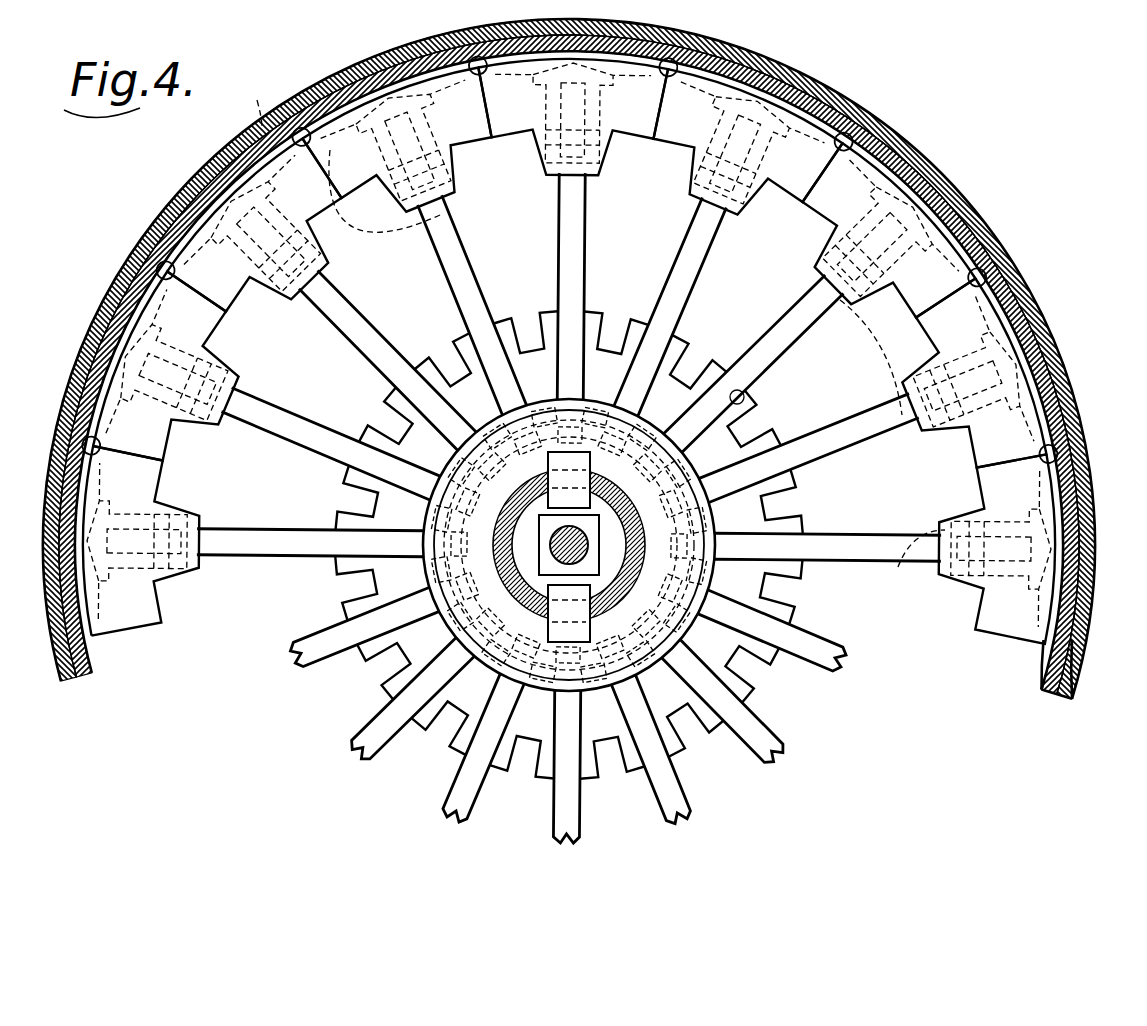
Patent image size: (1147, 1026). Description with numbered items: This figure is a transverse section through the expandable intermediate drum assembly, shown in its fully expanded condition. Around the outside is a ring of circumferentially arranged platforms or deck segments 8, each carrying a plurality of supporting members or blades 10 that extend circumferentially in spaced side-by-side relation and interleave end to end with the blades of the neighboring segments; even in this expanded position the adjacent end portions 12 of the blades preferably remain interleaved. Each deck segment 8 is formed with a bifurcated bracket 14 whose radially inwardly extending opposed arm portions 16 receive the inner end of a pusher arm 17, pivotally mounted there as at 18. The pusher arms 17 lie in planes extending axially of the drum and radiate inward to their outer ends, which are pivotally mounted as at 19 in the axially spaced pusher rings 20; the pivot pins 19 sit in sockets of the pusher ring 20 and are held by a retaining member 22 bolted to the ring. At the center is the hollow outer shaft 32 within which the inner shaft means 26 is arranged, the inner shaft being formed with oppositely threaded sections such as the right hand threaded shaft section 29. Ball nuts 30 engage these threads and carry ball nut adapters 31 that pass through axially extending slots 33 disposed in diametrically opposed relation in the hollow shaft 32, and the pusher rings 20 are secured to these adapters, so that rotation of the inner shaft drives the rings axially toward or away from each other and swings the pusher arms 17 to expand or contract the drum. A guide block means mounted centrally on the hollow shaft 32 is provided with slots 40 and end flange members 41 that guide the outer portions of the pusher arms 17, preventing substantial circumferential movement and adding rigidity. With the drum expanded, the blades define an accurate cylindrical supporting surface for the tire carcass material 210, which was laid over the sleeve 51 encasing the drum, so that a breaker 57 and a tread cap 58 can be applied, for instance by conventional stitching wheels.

The deck segment 8 is at (877, 165).
The supporting member or blade 10 is at (511, 120).
The adjacent end portion of blade 12 is at (293, 97).
The bifurcated bracket 14 is at (545, 32).
The arm portion 16 is at (405, 226).
The pusher arm 17 is at (670, 274).
The pivot 18 is at (545, 152).
The pivot pin 19 is at (595, 417).
The pusher ring 20 is at (658, 528).
The retaining member 22 is at (682, 623).
The inner shaft means 26 is at (583, 538).
The right hand threaded shaft section 29 is at (548, 545).
The ball nut 30 is at (605, 559).
The ball nut adapter 31 is at (543, 643).
The hollow outer shaft 32 is at (505, 440).
The axially extending slot 33 is at (570, 478).
The slot 40 is at (480, 342).
The end flange member 41 is at (677, 387).
The sleeve 51 is at (1044, 655).
The breaker 57 is at (1052, 696).
The tread cap 58 is at (1070, 660).
The tire carcass material 210 is at (1040, 690).